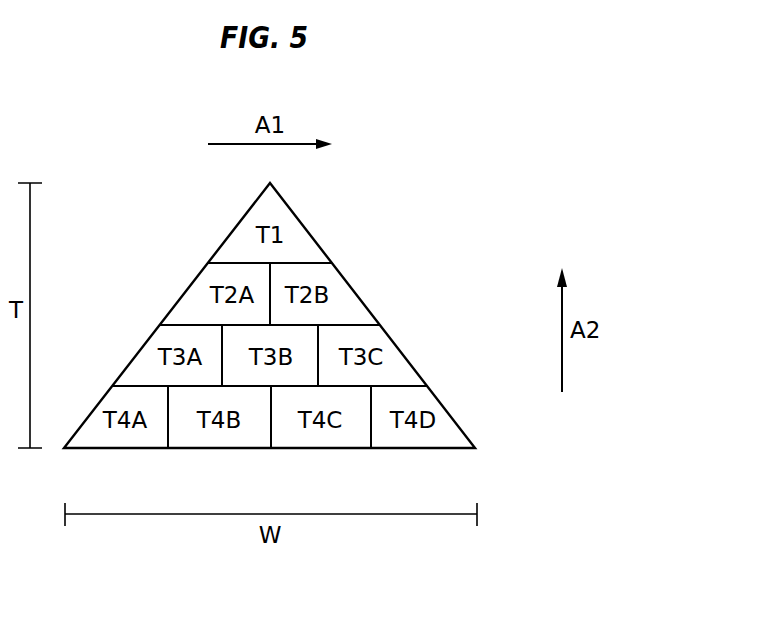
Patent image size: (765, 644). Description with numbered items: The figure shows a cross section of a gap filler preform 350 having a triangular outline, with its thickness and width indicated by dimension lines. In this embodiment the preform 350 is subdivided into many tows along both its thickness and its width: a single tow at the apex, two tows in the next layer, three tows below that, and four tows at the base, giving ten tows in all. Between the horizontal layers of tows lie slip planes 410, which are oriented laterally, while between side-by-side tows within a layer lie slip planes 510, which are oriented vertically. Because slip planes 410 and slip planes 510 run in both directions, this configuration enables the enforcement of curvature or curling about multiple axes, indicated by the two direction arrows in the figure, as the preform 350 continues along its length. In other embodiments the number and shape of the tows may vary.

The preform 350 is at (480, 168).
The slip planes 410 is at (308, 262).
The slip planes 510 is at (222, 340).